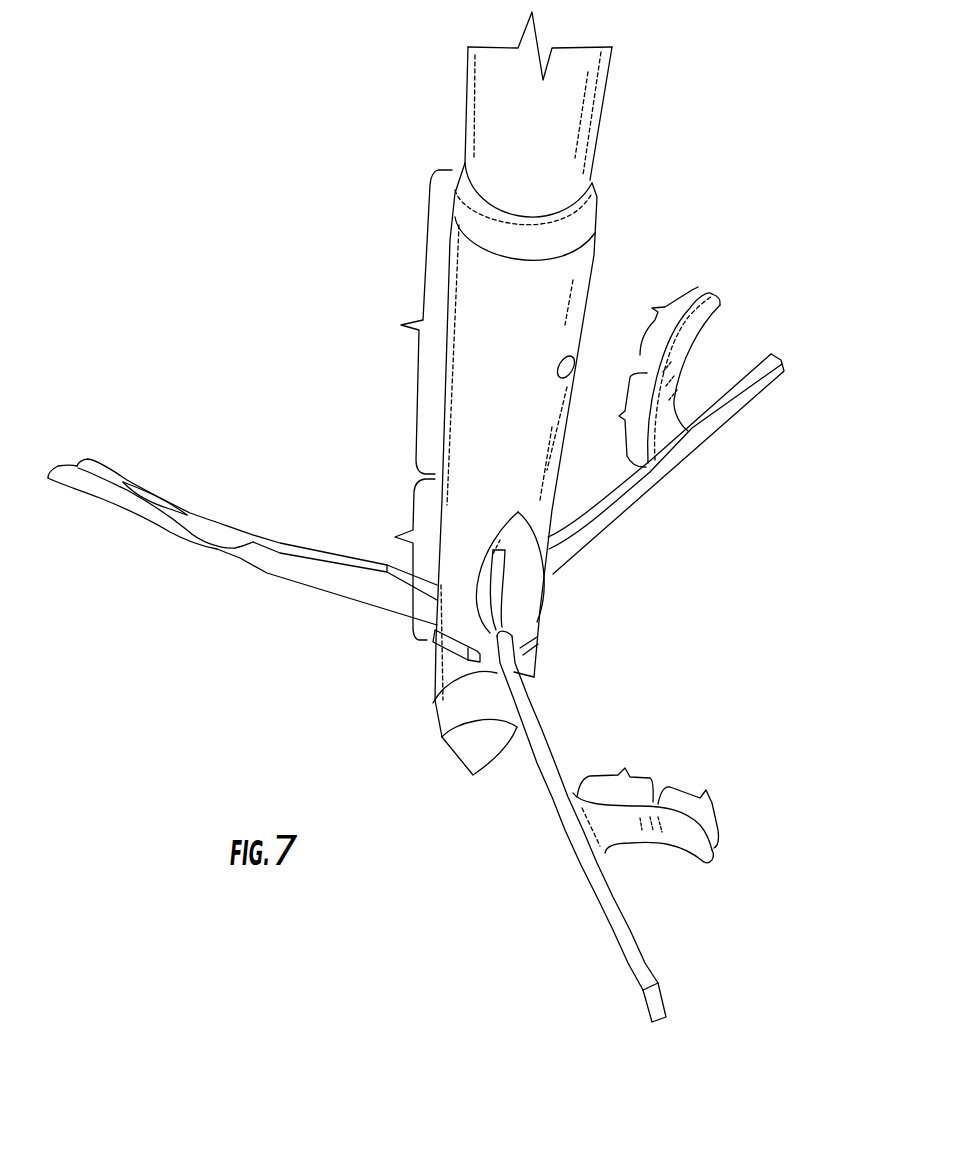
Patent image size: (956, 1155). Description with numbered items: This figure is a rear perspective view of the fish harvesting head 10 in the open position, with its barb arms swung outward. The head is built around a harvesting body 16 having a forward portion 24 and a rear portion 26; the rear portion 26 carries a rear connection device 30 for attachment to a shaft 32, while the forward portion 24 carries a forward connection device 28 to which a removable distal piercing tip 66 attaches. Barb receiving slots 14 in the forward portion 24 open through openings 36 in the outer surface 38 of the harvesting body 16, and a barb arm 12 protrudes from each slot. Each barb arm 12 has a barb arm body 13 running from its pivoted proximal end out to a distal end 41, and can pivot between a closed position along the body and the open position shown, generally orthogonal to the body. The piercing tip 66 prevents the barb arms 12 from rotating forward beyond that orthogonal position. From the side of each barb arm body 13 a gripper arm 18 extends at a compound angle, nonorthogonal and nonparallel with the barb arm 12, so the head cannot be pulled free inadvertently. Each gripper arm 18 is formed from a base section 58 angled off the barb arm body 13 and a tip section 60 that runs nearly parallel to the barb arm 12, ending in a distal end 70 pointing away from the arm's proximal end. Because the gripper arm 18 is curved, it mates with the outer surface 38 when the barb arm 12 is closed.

The fish harvesting head 10 is at (270, 198).
The barb arm 12 is at (627, 520).
The barb arm body 13 is at (660, 480).
The barb receiving slot 14 is at (530, 600).
The harvesting body 16 is at (588, 264).
The gripper arm 18 is at (686, 358).
The forward portion 24 is at (402, 559).
The rear portion 26 is at (416, 322).
The forward connection device 28 is at (438, 700).
The rear connection device 30 is at (592, 192).
The shaft 32 is at (593, 141).
The opening 36 is at (533, 573).
The outer surface 38 is at (506, 495).
The distal end 41 is at (783, 362).
The base section 58 is at (615, 587).
The tip section 60 is at (679, 565).
The distal piercing tip 66 is at (447, 735).
The distal end of the gripper arm 70 is at (713, 296).